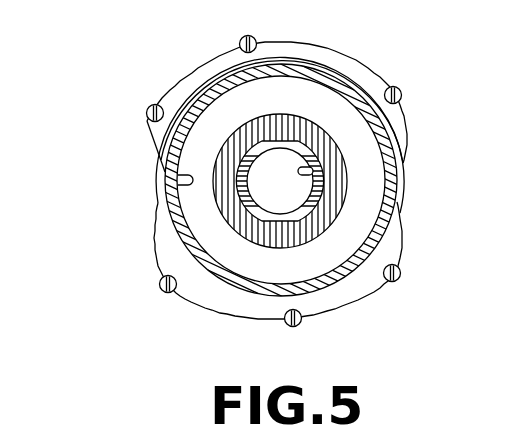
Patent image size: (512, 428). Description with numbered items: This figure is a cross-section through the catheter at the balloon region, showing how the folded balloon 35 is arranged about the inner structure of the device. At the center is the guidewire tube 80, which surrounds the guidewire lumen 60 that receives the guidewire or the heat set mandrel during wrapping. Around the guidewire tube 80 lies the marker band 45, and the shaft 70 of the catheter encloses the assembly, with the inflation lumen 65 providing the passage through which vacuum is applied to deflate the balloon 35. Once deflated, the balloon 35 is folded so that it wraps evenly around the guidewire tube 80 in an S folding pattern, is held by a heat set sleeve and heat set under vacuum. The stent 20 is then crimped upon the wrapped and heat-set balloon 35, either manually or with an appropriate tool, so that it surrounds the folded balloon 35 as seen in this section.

The stent 20 is at (239, 44).
The balloon 35 is at (205, 78).
The shaft 70 is at (166, 152).
The inflation lumen 65 is at (177, 184).
The marker band 45 is at (228, 217).
The guidewire tube 80 is at (318, 205).
The guidewire lumen 60 is at (313, 172).